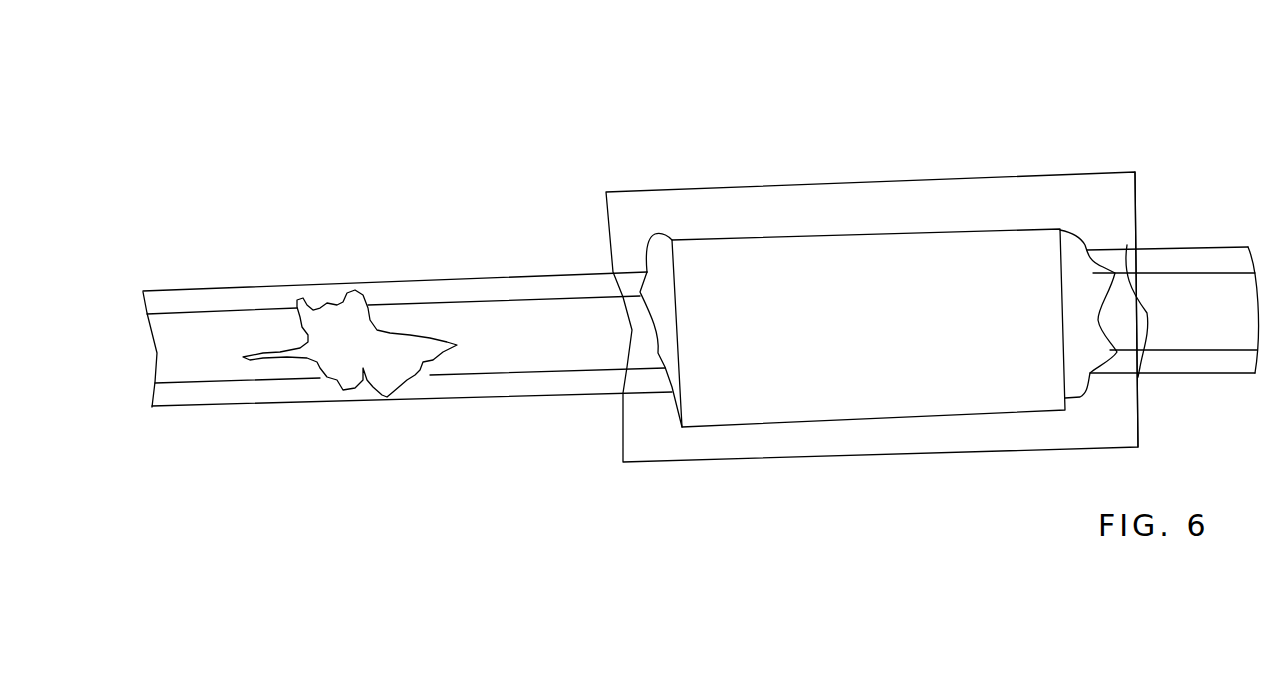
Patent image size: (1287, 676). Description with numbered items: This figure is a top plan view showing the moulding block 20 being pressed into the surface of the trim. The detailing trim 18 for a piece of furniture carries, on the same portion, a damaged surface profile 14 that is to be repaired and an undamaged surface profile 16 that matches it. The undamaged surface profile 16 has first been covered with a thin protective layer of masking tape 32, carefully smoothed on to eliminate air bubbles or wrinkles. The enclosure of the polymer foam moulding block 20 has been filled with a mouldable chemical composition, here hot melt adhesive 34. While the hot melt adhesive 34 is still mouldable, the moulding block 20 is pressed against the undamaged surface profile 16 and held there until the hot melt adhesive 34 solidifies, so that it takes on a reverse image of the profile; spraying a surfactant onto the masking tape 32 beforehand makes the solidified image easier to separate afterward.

The damaged surface profile 14 is at (338, 250).
The undamaged surface profile 16 is at (812, 157).
The detailing trim 18 is at (492, 397).
The polymer foam moulding block 20 is at (877, 260).
The masking tape 32 is at (1143, 197).
The hot melt adhesive 34 is at (1103, 282).